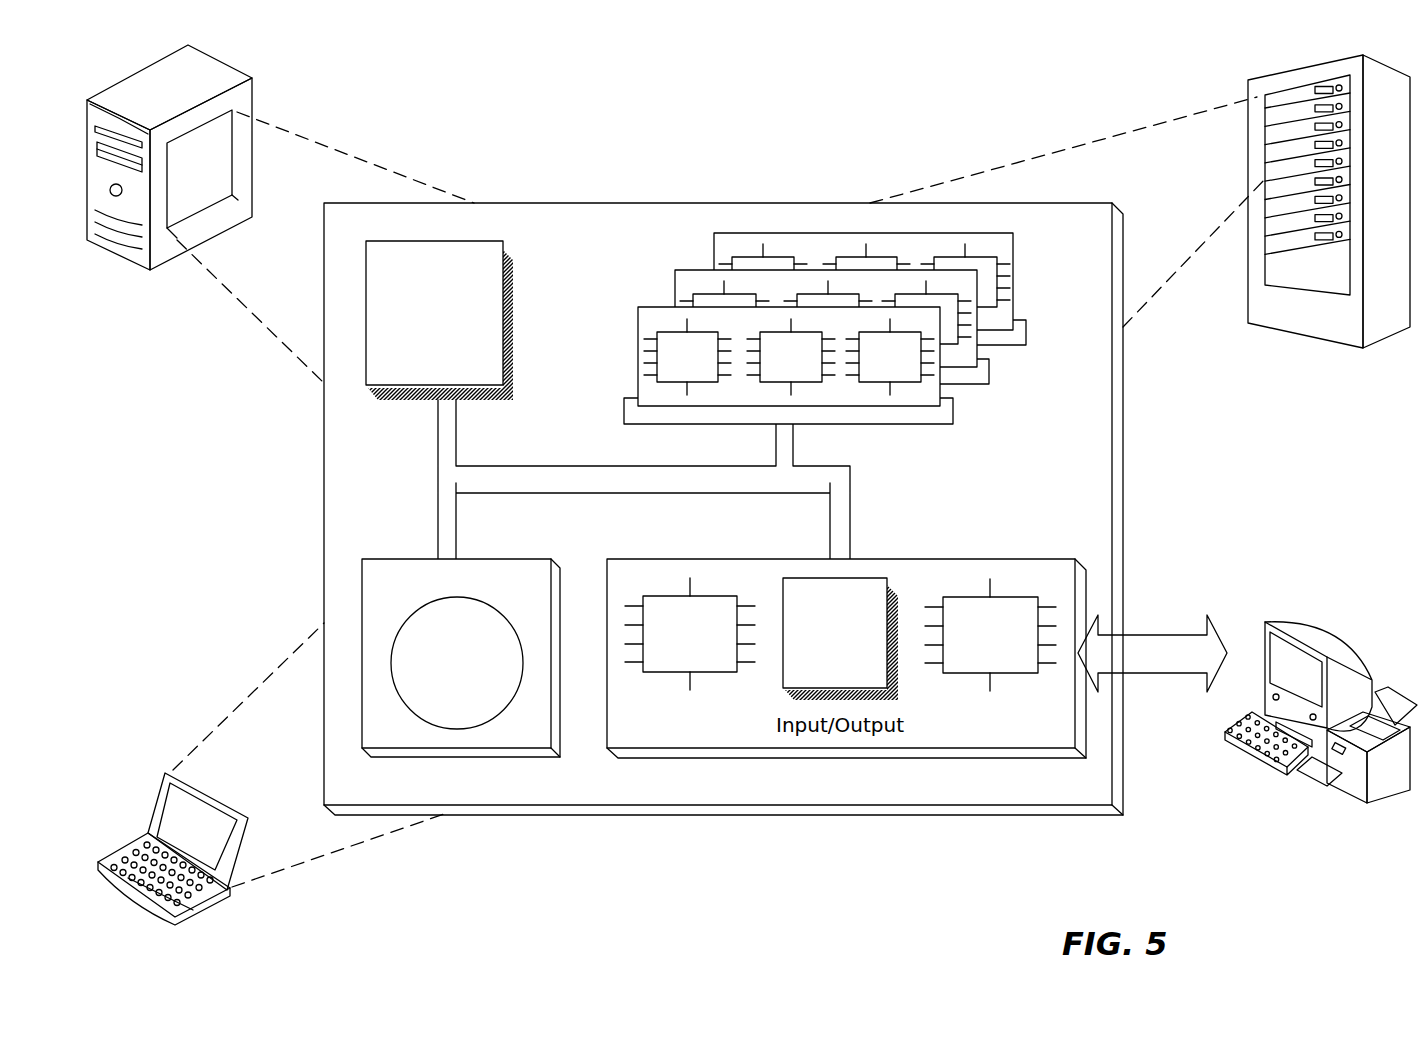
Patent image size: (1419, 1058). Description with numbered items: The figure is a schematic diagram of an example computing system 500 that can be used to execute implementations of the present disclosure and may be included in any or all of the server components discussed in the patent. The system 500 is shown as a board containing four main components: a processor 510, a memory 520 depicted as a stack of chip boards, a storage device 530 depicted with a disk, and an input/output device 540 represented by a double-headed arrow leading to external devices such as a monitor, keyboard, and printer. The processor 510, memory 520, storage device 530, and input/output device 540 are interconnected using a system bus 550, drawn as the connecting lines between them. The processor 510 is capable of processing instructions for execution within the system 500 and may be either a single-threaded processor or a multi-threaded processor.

The computing system 500 is at (536, 118).
The processor 510 is at (493, 377).
The memory 520 is at (1025, 386).
The storage device 530 is at (541, 739).
The input/output device 540 is at (1265, 625).
The system bus 550 is at (644, 479).